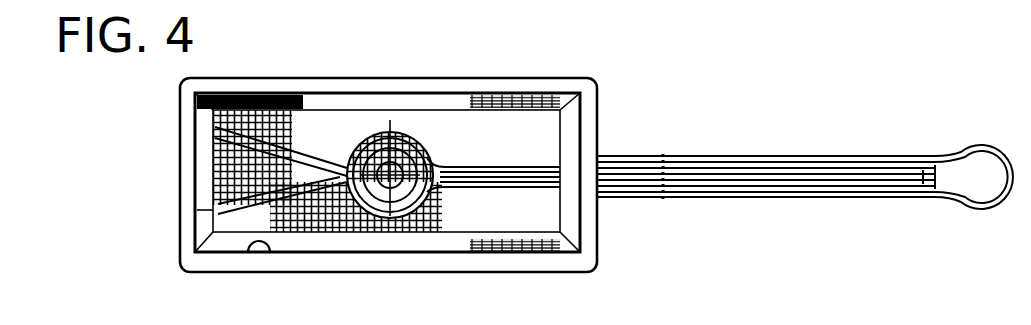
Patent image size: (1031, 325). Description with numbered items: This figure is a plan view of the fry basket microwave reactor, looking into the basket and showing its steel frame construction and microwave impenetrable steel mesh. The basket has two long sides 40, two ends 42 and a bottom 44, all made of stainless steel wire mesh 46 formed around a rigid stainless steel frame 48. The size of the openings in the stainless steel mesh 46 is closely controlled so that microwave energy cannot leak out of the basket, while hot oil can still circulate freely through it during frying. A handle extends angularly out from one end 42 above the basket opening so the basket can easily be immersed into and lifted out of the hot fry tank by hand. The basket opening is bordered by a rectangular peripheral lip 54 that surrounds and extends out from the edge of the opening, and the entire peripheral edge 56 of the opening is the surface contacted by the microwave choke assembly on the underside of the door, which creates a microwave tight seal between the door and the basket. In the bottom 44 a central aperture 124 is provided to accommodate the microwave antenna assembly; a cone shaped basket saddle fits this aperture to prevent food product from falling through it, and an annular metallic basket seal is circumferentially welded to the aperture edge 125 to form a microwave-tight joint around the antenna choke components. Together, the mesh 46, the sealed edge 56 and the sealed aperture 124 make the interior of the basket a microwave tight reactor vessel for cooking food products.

The long sides 40 is at (469, 95).
The ends 42 is at (195, 148).
The bottom 44 is at (318, 130).
The stainless steel wire mesh 46 is at (436, 207).
The rigid stainless steel frame 48 is at (520, 166).
The rectangular peripheral lip 54 is at (243, 92).
The peripheral edge 56 is at (268, 246).
The central aperture 124 is at (372, 152).
The aperture edge 125 is at (426, 152).